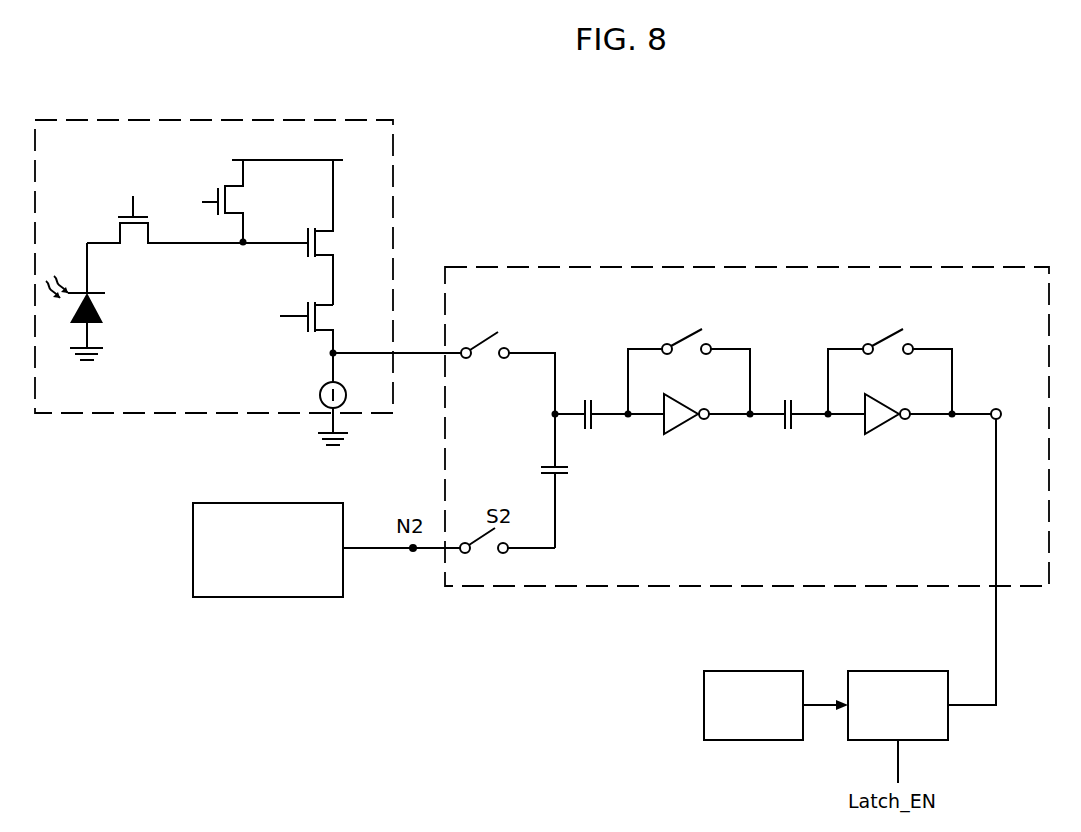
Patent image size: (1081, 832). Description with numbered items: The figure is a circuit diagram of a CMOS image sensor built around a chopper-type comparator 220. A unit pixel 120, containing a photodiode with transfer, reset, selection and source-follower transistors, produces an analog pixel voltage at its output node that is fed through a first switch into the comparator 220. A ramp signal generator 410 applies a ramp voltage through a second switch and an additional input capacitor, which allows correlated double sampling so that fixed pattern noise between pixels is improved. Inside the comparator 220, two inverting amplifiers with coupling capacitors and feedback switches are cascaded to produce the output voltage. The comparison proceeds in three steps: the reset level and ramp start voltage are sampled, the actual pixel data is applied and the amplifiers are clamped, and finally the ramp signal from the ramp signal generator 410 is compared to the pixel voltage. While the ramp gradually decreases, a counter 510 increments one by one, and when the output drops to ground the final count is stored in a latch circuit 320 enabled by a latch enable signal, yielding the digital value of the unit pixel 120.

The unit pixel 120 is at (322, 119).
The chopper-type comparator 220 is at (928, 267).
The ramp signal generator 410 is at (302, 503).
The counter 510 is at (765, 671).
The latch circuit 320 is at (908, 671).